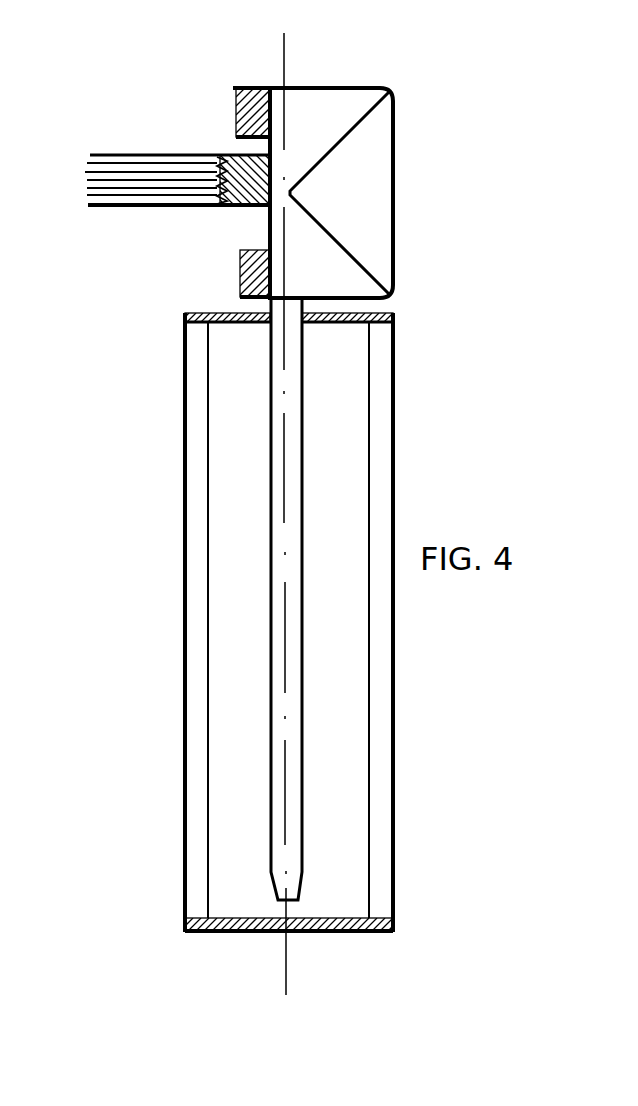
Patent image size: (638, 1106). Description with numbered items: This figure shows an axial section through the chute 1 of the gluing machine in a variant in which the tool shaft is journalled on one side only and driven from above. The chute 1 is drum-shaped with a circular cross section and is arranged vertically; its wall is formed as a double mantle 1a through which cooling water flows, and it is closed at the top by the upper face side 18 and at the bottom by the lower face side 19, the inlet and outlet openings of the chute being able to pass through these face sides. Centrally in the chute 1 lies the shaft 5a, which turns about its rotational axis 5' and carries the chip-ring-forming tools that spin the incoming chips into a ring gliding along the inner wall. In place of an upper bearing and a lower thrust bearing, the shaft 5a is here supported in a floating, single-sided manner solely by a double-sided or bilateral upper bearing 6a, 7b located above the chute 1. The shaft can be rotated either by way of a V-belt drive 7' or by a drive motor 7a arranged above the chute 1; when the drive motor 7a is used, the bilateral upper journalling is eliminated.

The chute 1 is at (183, 487).
The double mantle 1a is at (193, 567).
The shaft 5a is at (277, 646).
The rotational axis 5' is at (177, 514).
The upper bearing 6a is at (240, 273).
The drive motor 7a is at (362, 180).
The upper bearing 7b is at (238, 113).
The V-belt drive 7' is at (190, 218).
The upper face side 18 is at (380, 313).
The lower face side 19 is at (217, 930).